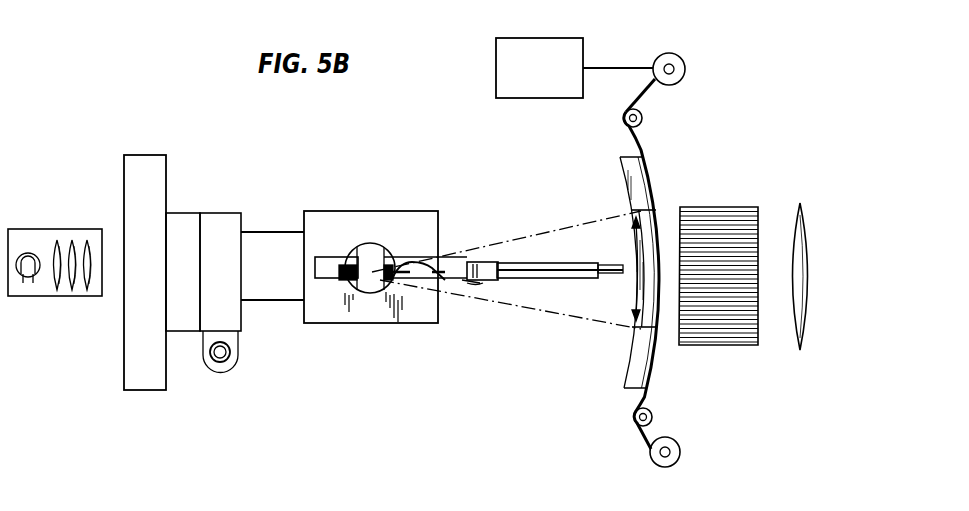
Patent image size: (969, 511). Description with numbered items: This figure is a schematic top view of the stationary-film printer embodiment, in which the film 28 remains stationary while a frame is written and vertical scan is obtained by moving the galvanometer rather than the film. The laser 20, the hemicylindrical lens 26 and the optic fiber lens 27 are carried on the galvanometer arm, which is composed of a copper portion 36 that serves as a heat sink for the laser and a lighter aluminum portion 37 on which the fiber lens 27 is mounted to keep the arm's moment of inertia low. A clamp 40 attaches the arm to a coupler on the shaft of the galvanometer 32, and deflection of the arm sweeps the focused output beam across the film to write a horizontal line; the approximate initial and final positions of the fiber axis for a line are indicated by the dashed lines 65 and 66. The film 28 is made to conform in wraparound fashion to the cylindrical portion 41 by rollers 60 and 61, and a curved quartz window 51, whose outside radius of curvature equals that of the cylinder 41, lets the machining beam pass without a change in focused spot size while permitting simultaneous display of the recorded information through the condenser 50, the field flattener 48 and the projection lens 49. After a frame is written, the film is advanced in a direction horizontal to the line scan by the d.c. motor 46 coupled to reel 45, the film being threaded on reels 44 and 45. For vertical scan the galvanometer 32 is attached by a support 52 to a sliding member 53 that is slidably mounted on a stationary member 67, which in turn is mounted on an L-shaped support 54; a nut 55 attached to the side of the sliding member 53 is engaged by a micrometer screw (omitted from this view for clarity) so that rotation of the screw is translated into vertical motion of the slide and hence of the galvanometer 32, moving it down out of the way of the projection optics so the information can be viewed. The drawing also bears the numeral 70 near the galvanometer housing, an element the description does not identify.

The laser 20 is at (443, 282).
The hemicylindrical lens 26 is at (477, 284).
The optic fiber lens 27 is at (612, 264).
The film 28 is at (636, 431).
The galvanometer 32 is at (423, 220).
The copper portion of arm 36 is at (485, 262).
The aluminum portion of arm 37 is at (577, 279).
The clamp 40 is at (367, 250).
The cylindrical portion 41 is at (627, 384).
The reel 44 is at (681, 452).
The reel 45 is at (686, 69).
The d.c. motor 46 is at (530, 95).
The field flattener 48 is at (712, 213).
The projection lens 49 is at (793, 223).
The condenser 50 is at (38, 228).
The curved quartz window 51 is at (640, 328).
The support 52 is at (270, 288).
The sliding member 53 is at (234, 243).
The L-shaped support 54 is at (140, 165).
The nut 55 is at (222, 366).
The roller 60 is at (643, 119).
The roller 61 is at (652, 411).
The initial position line 65 is at (557, 227).
The final position line 66 is at (530, 310).
The stationary member 67 is at (180, 226).
The shaded support region 70 is at (397, 307).